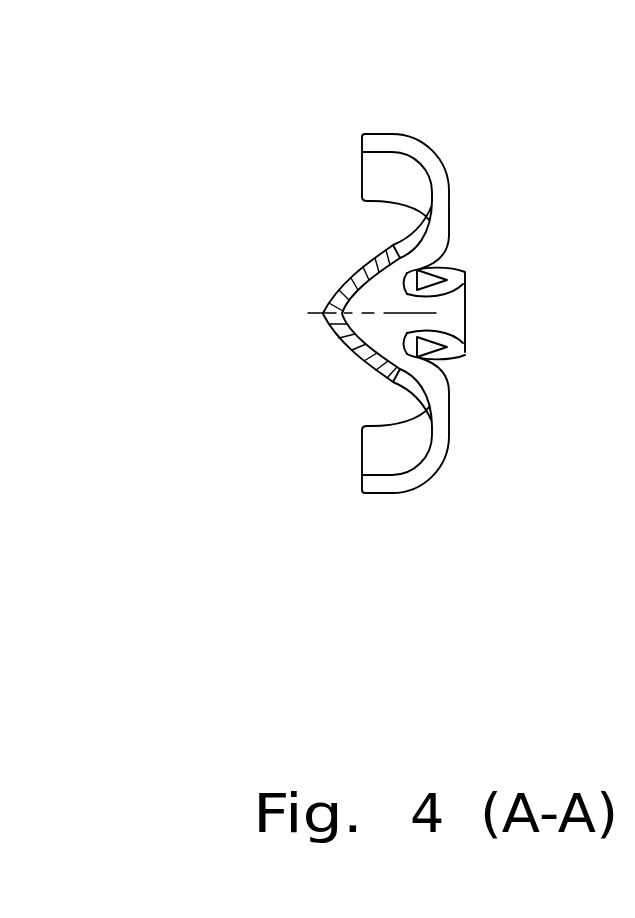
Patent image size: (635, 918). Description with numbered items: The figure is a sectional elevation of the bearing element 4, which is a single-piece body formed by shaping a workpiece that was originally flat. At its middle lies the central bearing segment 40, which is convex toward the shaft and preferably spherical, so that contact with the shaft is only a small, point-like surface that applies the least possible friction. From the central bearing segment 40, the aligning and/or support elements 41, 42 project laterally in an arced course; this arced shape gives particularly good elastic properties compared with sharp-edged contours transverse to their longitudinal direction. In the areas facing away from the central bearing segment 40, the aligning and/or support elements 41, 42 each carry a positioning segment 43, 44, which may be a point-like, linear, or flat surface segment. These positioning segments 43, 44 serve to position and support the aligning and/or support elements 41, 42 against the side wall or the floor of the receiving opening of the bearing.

The bearing element 4 is at (310, 165).
The central bearing segment 40 is at (323, 313).
The aligning and/or support element 41 is at (448, 188).
The aligning and/or support element 42 is at (450, 357).
The positioning segment 43 is at (373, 132).
The positioning segment 44 is at (467, 318).